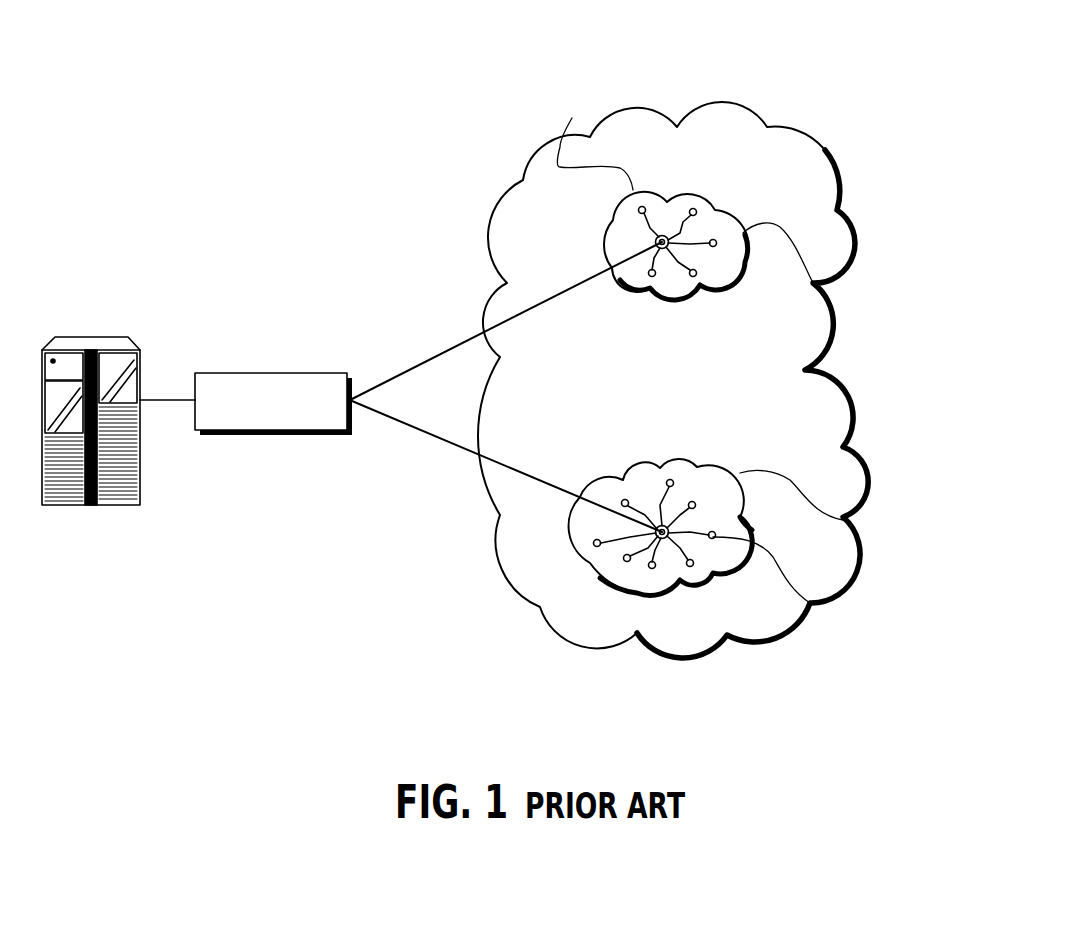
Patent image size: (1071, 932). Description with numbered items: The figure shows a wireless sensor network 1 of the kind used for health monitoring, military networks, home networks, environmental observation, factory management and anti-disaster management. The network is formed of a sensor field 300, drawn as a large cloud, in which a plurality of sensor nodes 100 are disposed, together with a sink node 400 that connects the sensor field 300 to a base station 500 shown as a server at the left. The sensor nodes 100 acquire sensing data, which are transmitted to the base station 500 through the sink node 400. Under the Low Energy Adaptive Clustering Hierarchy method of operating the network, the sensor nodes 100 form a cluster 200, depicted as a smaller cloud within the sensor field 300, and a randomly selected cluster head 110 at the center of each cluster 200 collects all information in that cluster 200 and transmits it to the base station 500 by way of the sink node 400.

The wireless sensor network 1 is at (376, 185).
The sensor nodes 100 is at (815, 283).
The cluster head 110 is at (662, 235).
The cluster 200 is at (878, 512).
The sensor field 300 is at (673, 337).
The sink node 400 is at (262, 435).
The base station 500 is at (92, 508).